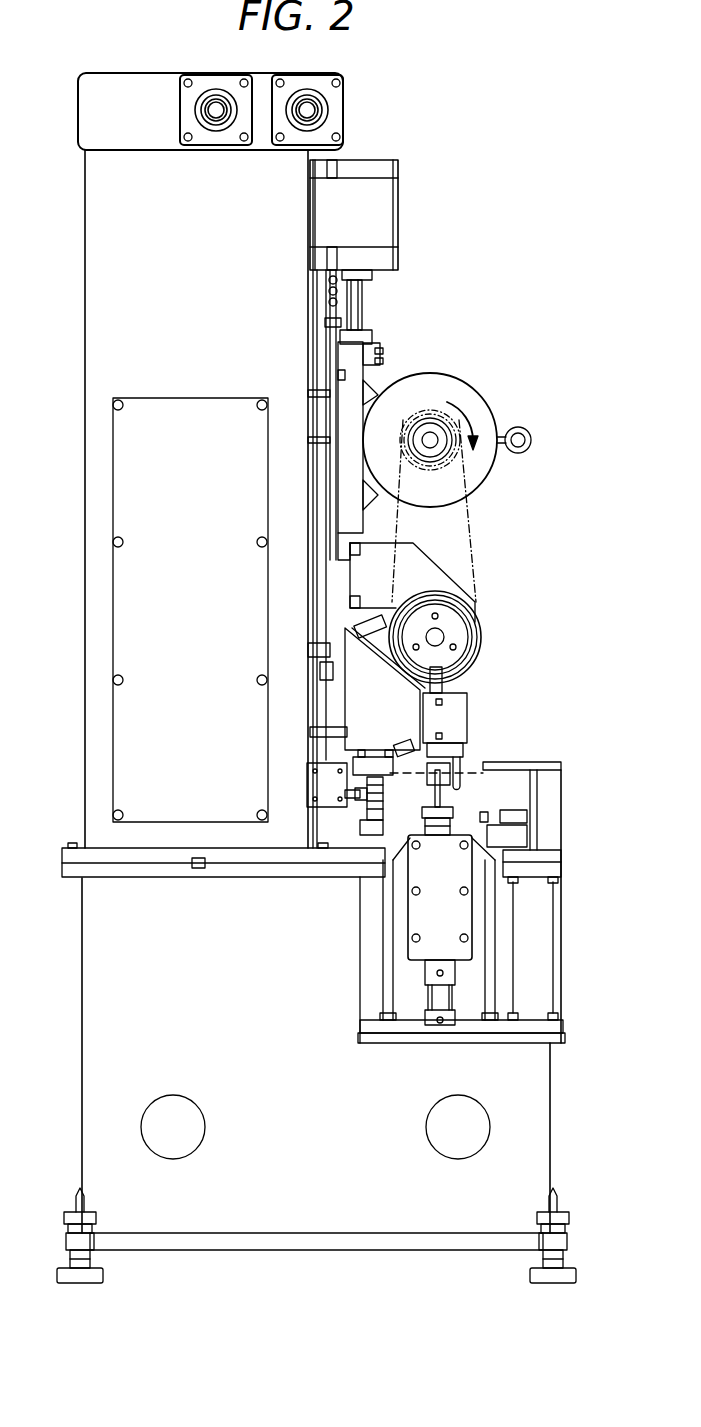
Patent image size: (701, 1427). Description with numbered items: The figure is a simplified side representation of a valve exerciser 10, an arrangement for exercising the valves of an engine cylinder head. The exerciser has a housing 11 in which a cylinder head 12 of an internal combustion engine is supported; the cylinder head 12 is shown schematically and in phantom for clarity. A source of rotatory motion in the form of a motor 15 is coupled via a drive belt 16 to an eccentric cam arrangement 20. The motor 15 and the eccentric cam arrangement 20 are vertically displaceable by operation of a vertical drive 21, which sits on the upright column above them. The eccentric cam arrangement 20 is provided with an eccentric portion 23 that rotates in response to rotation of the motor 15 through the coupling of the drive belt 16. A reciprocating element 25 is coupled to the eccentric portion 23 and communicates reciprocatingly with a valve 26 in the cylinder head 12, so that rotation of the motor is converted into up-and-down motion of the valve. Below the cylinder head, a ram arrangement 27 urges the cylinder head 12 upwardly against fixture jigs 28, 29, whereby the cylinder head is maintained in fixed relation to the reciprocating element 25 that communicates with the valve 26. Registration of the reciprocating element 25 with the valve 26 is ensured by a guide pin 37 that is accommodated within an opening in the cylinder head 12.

The valve exerciser 10 is at (201, 1000).
The housing 11 is at (97, 822).
The cylinder head 12 is at (513, 790).
The motor 15 is at (463, 391).
The drive belt 16 is at (473, 548).
The eccentric cam arrangement 20 is at (490, 620).
The vertical drive 21 is at (395, 310).
The eccentric portion 23 is at (473, 643).
The reciprocating element 25 is at (440, 682).
The valve 26 is at (432, 792).
The ram arrangement 27 is at (428, 922).
The fixture jig 28 is at (395, 743).
The fixture jig 29 is at (497, 760).
The guide pin 37 is at (462, 783).